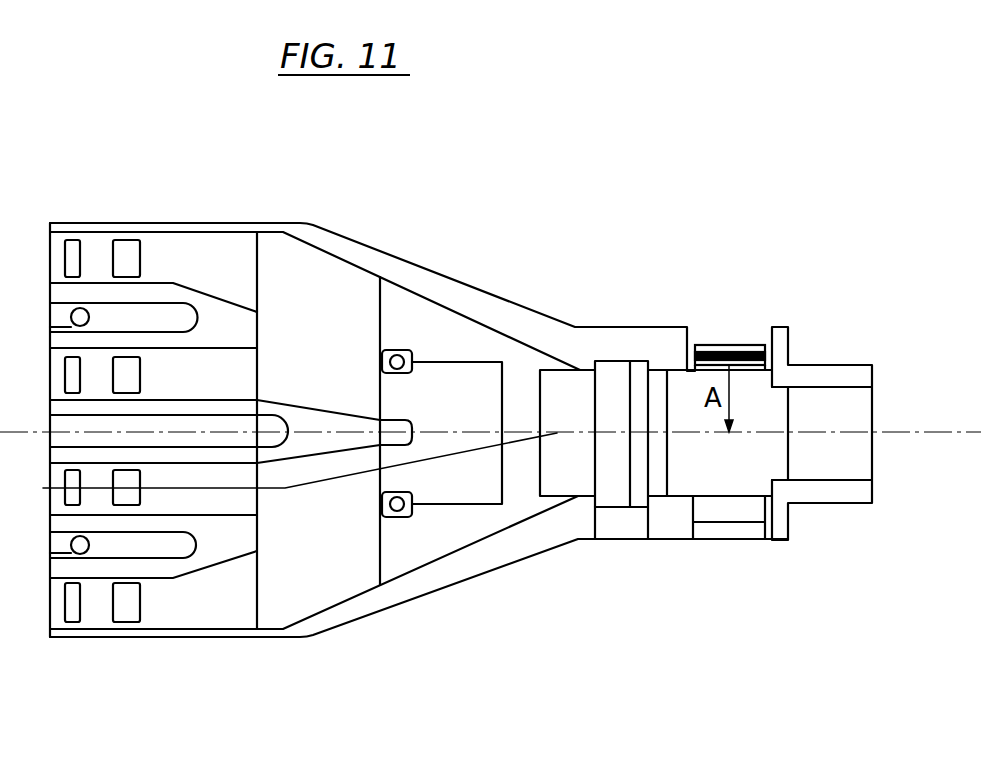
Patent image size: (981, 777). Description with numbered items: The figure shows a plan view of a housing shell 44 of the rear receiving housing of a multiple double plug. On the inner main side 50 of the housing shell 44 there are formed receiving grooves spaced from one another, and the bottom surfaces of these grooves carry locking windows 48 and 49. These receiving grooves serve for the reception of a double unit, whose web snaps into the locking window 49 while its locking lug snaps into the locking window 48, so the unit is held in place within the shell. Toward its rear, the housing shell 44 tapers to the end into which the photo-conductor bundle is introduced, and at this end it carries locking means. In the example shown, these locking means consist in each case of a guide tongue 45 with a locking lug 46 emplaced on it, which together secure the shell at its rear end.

The housing shell 44 is at (267, 223).
The guide tongue 45 is at (713, 345).
The locking lug 46 is at (752, 352).
The locking window 48 is at (149, 246).
The locking window 49 is at (84, 246).
The inner main side 50 is at (195, 618).